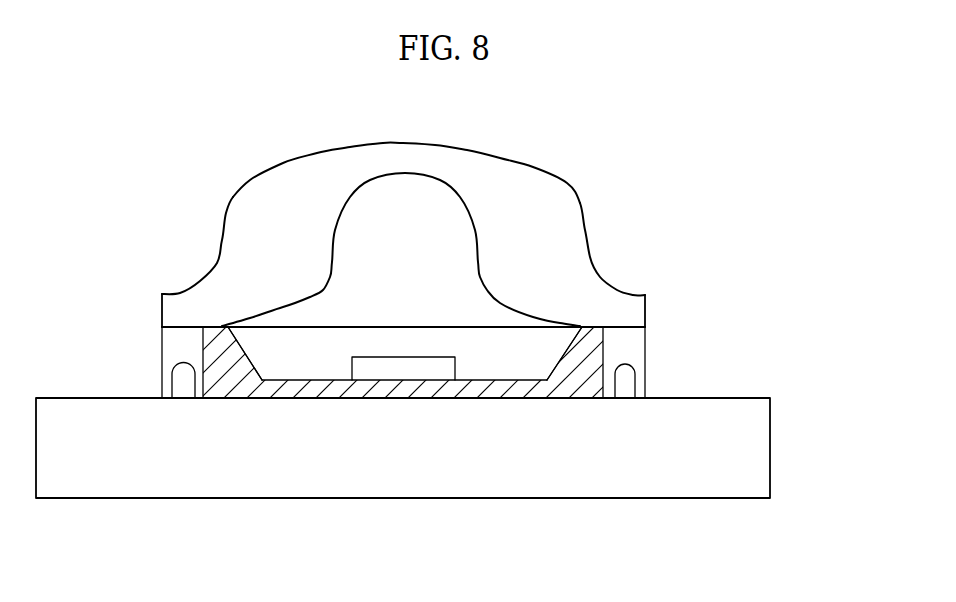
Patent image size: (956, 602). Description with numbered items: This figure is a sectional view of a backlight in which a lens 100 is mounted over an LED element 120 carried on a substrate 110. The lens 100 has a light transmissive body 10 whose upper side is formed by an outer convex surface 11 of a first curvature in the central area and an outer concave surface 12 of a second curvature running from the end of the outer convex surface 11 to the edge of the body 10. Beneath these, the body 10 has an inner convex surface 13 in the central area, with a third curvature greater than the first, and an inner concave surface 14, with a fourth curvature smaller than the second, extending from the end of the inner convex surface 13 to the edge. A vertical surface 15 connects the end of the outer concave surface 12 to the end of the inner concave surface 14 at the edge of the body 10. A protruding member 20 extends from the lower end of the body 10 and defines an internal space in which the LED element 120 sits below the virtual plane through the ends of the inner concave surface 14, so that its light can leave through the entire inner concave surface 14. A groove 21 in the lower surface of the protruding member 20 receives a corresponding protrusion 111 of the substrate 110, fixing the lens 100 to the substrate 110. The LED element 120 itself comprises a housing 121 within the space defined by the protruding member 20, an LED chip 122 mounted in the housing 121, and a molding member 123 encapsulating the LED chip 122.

The body 10 is at (476, 230).
The outer convex surface 11 is at (472, 147).
The outer concave surface 12 is at (597, 248).
The inner convex surface 13 is at (463, 210).
The inner concave surface 14 is at (533, 312).
The vertical surface 15 is at (447, 310).
The protruding member 20 is at (460, 361).
The groove 21 is at (625, 360).
The lens 100 is at (491, 265).
The substrate 110 is at (750, 458).
The protrusion 111 is at (636, 388).
The LED element 120 is at (405, 462).
The housing 121 is at (328, 393).
The LED chip 122 is at (407, 372).
The molding member 123 is at (478, 365).